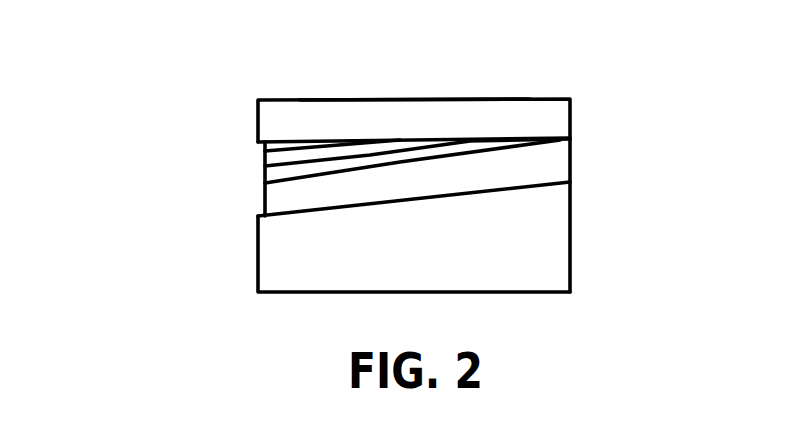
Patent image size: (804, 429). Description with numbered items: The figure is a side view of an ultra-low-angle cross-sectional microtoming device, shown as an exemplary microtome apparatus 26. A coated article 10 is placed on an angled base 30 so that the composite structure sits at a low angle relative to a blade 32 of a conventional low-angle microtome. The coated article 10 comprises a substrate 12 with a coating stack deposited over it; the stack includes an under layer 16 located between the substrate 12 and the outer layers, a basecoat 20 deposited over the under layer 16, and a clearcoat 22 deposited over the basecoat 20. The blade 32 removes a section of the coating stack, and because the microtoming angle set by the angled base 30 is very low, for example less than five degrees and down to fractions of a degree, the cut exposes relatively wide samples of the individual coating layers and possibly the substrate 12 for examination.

The coated article 10 is at (181, 172).
The substrate 12 is at (265, 206).
The under layer 16 is at (263, 183).
The basecoat 20 is at (265, 166).
The clearcoat 22 is at (265, 151).
The microtome apparatus 26 is at (290, 71).
The angled base 30 is at (572, 231).
The blade 32 is at (572, 110).